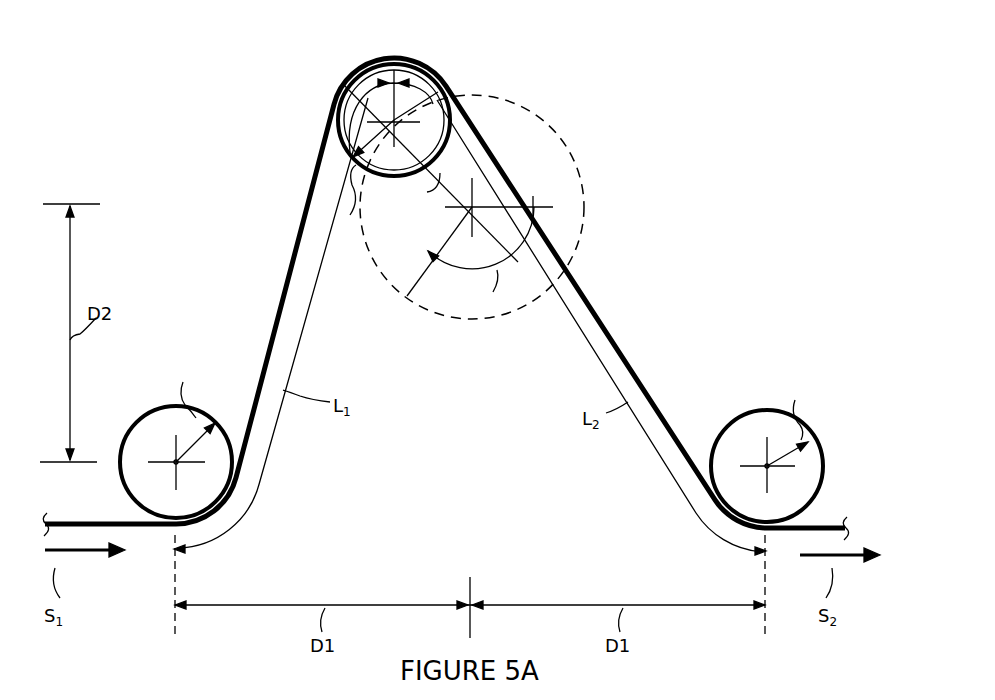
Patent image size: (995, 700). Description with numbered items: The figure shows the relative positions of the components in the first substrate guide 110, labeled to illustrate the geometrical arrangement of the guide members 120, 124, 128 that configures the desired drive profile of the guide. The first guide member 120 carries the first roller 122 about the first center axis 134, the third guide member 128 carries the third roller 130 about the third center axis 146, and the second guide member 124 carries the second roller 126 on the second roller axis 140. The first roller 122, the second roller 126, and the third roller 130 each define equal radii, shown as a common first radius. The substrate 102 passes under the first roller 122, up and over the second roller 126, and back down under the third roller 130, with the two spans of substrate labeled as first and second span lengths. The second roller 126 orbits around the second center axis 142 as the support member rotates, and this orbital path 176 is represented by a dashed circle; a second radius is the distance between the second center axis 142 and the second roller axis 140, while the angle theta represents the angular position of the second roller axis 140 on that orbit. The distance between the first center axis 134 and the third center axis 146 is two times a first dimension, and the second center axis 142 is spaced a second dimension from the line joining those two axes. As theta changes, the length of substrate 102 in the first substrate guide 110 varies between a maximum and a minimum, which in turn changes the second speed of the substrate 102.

The first substrate guide 110 is at (155, 135).
The substrate 102 is at (142, 532).
The first guide member 120 is at (177, 415).
The first roller 122 is at (153, 438).
The second guide member 124 is at (470, 137).
The second roller 126 is at (410, 78).
The third guide member 128 is at (751, 429).
The third roller 130 is at (743, 430).
The first center axis 134 is at (176, 462).
The second roller axis 140 is at (383, 140).
The second center axis 142 is at (472, 207).
The third center axis 146 is at (768, 466).
The orbital path 176 is at (440, 316).